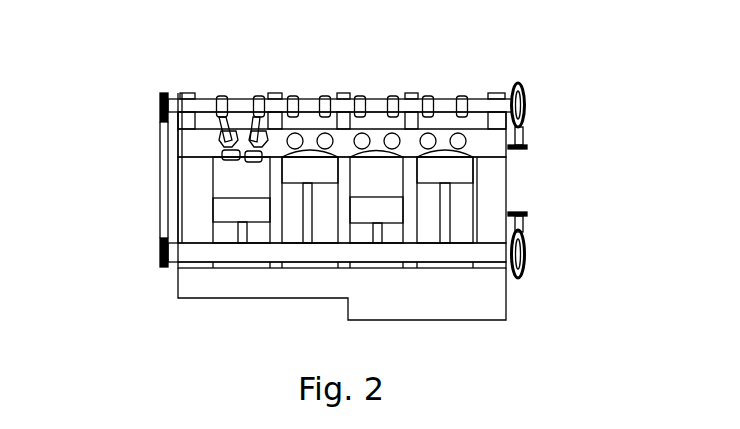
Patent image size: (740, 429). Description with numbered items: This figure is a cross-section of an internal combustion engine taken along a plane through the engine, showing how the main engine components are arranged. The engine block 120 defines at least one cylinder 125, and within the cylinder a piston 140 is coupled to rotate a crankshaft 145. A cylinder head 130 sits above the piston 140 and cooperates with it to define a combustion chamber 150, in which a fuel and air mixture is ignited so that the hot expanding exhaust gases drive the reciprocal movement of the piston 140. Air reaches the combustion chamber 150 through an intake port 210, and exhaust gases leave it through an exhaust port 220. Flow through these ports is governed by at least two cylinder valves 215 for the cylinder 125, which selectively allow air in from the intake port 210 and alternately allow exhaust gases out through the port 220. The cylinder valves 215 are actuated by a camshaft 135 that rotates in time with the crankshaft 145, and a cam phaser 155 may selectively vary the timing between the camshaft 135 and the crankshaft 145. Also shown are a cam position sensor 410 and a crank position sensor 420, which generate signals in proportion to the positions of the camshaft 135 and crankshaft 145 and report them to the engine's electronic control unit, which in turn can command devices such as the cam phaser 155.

The cam phaser 155 is at (158, 105).
The camshaft 135 is at (232, 97).
The cylinder valves 215 is at (224, 151).
The cylinder head 130 is at (178, 146).
The engine block 120 is at (180, 200).
The crankshaft 145 is at (207, 255).
The piston 140 is at (378, 210).
The exhaust port 220 is at (312, 118).
The intake port 210 is at (351, 181).
The cylinder 125 is at (408, 122).
The cam position sensor 410 is at (527, 145).
The combustion chamber 150 is at (452, 158).
The crank position sensor 420 is at (527, 215).